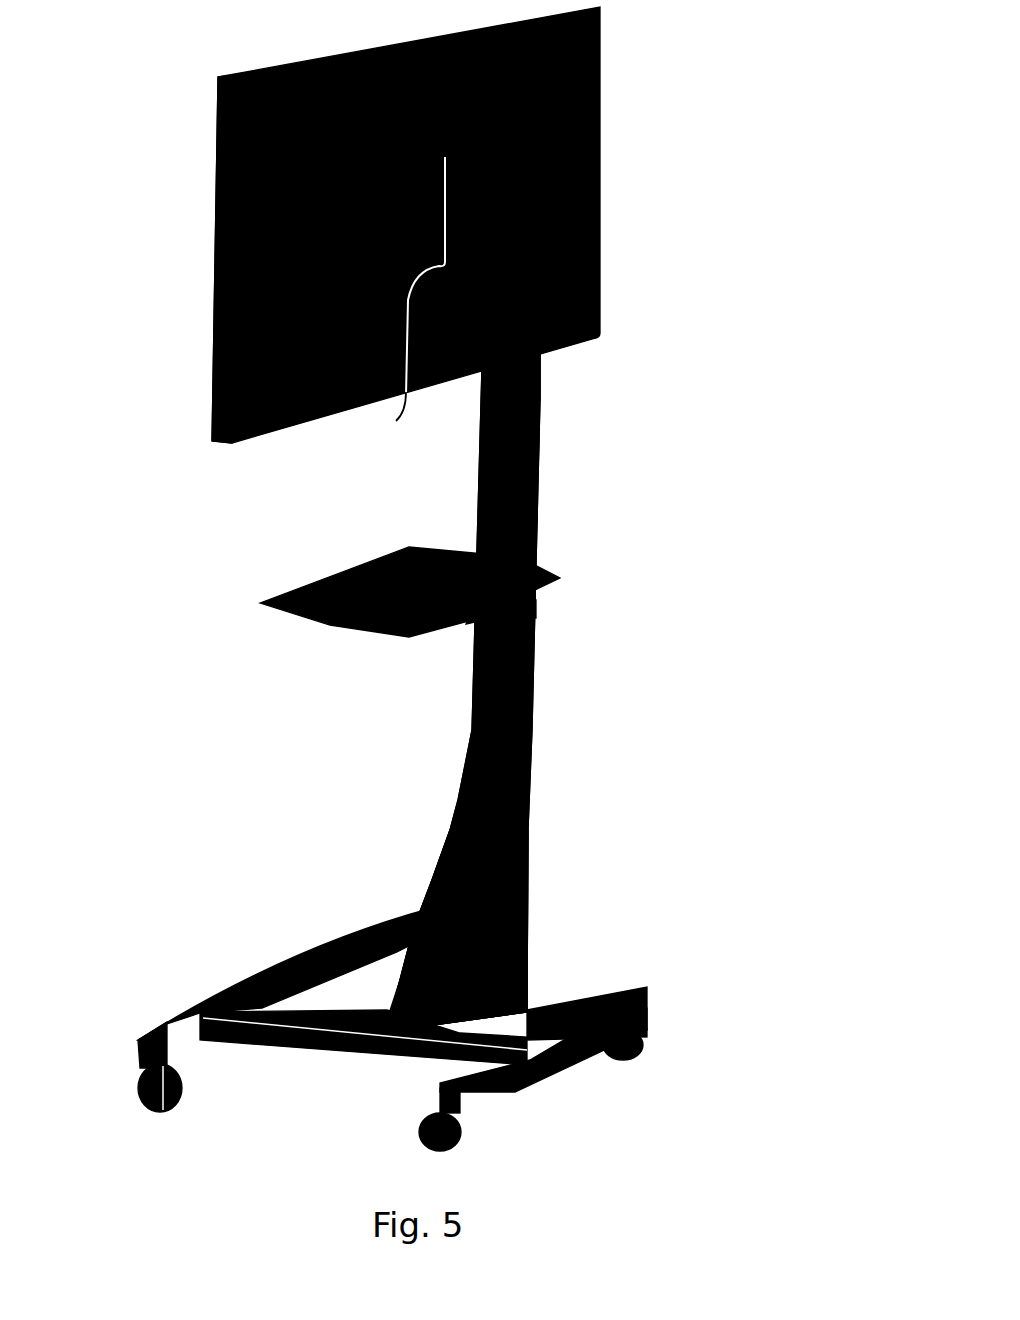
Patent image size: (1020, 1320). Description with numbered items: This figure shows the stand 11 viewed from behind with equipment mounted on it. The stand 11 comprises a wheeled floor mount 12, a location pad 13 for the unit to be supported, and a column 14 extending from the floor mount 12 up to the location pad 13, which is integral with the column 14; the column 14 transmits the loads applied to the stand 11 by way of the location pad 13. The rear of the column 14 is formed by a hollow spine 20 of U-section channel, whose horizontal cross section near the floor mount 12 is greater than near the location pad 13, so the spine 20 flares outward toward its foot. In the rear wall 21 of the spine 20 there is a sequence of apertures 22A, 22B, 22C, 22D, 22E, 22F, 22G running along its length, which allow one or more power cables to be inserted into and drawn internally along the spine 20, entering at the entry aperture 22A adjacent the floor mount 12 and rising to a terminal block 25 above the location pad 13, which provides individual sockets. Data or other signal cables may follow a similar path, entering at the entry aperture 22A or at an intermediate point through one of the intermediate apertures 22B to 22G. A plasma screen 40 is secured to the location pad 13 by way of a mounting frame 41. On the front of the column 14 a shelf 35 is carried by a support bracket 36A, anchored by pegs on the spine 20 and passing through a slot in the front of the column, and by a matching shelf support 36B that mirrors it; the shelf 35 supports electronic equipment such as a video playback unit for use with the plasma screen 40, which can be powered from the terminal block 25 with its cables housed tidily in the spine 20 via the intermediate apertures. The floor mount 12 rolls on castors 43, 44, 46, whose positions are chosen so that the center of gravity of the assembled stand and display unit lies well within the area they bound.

The stand 11 is at (572, 405).
The floor mount 12 is at (548, 1012).
The location pad 13 is at (396, 421).
The column 14 is at (483, 480).
The hollow spine 20 is at (525, 882).
The rear wall 21 is at (535, 642).
The entry aperture 22A is at (523, 975).
The intermediate aperture 22B is at (530, 694).
The intermediate aperture 22C is at (533, 605).
The intermediate aperture 22D is at (535, 532).
The intermediate aperture 22E is at (540, 455).
The intermediate aperture 22F is at (538, 372).
The intermediate aperture 22G is at (600, 213).
The terminal block 25 is at (603, 128).
The shelf 35 is at (260, 598).
The support bracket 36A is at (533, 610).
The shelf support 36B is at (481, 632).
The plasma screen 40 is at (213, 397).
The mounting frame 41 is at (215, 272).
The castor 43 is at (465, 1133).
The castor 44 is at (137, 1080).
The castor 46 is at (648, 1060).